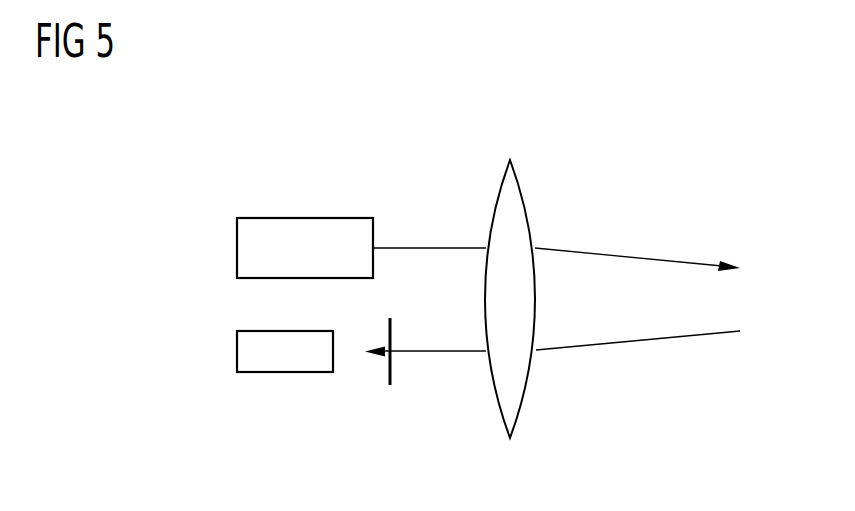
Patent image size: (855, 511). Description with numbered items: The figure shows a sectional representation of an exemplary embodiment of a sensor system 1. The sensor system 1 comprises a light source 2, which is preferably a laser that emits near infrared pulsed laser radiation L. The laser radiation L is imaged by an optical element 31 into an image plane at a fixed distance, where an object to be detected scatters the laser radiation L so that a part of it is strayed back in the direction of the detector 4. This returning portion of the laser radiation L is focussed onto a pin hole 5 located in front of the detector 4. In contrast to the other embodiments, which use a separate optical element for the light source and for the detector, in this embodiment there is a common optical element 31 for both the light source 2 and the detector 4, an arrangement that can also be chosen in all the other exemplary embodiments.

The sensor system 1 is at (644, 407).
The light source 2 is at (237, 248).
The detector 4 is at (237, 352).
The pin hole 5 is at (389, 378).
The optical element 31 is at (524, 202).
The laser radiation L is at (642, 258).